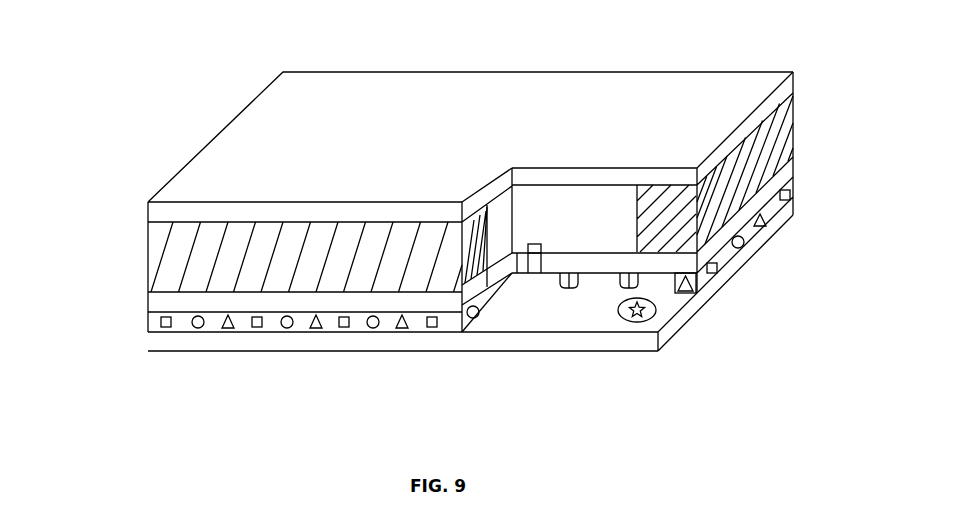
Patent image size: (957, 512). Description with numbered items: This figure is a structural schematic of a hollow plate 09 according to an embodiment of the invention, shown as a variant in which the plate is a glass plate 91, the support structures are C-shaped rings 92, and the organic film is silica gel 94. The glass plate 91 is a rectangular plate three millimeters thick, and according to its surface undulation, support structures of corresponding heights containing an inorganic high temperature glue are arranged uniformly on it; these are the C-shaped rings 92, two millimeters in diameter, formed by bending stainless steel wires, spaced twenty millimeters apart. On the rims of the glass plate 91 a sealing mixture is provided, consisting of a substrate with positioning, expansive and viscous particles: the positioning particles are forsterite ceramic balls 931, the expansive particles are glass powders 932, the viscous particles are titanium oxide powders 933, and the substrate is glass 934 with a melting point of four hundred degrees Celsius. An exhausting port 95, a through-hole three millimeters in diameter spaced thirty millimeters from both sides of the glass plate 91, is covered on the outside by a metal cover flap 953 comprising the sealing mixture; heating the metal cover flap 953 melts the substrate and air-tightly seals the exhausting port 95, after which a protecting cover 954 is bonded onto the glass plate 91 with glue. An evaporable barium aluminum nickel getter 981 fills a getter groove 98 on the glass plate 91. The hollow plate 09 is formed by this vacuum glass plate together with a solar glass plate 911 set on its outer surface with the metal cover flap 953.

The glass plate 91 is at (157, 342).
The solar glass plate 911 is at (148, 207).
The C-shaped rings 92 is at (617, 277).
The forsterite ceramic balls 931 is at (198, 329).
The glass powders 932 is at (226, 329).
The titanium oxide powders 933 is at (258, 329).
The glass 934 is at (290, 329).
The silica gel 94 is at (700, 283).
The exhausting port 95 is at (532, 273).
The metal cover flap 953 is at (528, 244).
The protecting cover 954 is at (540, 250).
The getter groove 98 is at (647, 318).
The evaporable barium aluminum nickel getter 981 is at (633, 308).
The hollow plate 09 is at (795, 388).